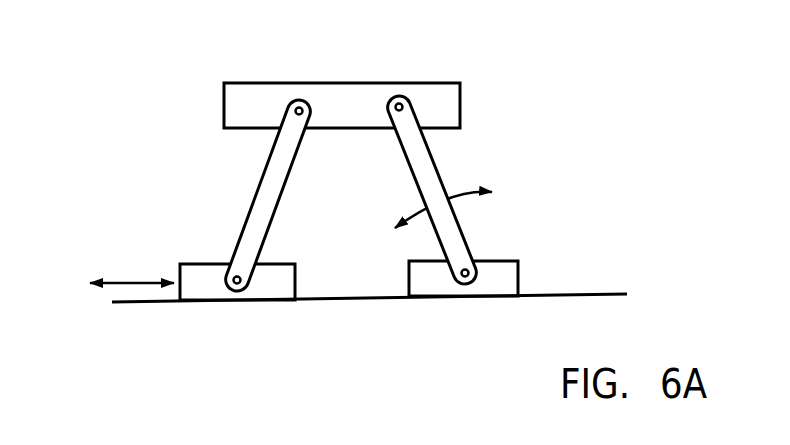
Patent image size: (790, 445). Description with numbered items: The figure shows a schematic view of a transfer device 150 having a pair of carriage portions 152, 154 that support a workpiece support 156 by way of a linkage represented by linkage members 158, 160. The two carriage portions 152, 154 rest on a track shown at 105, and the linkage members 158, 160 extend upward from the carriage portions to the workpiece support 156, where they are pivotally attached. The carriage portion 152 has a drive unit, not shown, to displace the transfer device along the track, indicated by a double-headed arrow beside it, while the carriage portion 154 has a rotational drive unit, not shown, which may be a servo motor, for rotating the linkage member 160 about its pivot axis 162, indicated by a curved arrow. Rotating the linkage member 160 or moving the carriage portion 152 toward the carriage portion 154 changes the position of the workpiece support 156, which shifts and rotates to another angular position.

The transfer device 150 is at (125, 136).
The base surface 105 is at (605, 294).
The carriage portion 152 is at (210, 284).
The carriage portion 154 is at (496, 281).
The workpiece support 156 is at (358, 88).
The linkage member 158 is at (262, 208).
The linkage member 160 is at (430, 177).
The pivot axis 162 is at (477, 262).